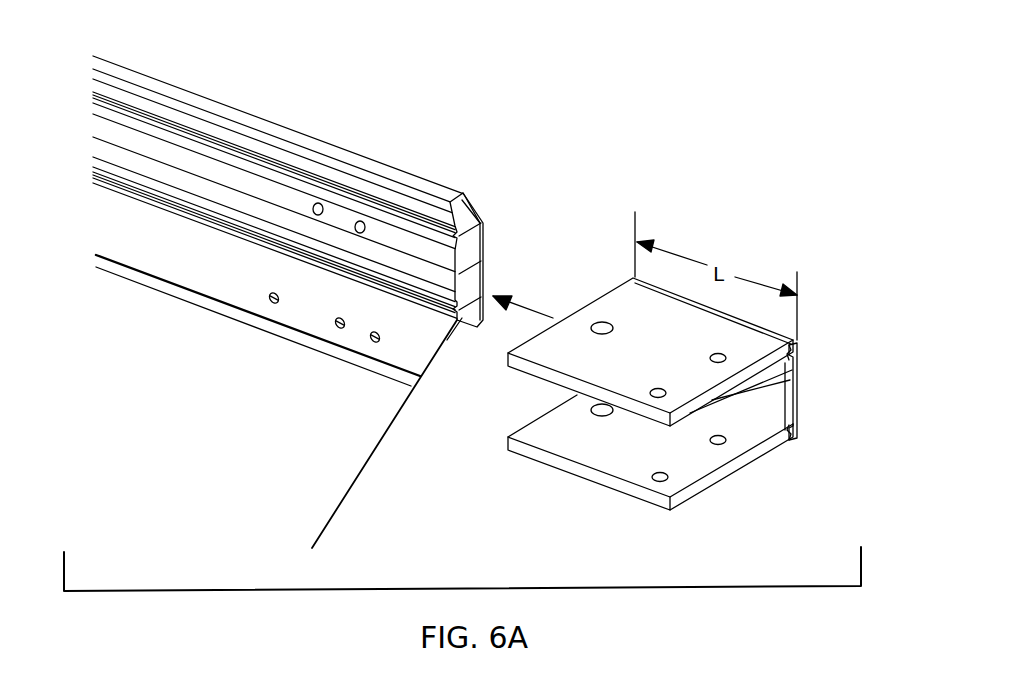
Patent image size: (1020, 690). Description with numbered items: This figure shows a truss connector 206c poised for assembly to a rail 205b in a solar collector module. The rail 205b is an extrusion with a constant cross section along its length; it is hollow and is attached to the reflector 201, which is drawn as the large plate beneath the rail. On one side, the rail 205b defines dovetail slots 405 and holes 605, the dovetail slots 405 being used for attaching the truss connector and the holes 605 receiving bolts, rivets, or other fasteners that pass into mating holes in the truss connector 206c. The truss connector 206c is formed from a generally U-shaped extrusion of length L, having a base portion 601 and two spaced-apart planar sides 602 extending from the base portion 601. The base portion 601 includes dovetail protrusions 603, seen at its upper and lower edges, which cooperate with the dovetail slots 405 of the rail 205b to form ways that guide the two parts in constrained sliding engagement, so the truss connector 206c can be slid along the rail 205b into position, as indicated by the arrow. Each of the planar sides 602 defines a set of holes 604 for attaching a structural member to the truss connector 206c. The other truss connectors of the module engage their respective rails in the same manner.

The reflector 201 is at (209, 433).
The rail 205b is at (214, 105).
The holes 605 is at (360, 221).
The dovetail slots 405 is at (485, 256).
The truss connector 206c is at (618, 308).
The holes 604 is at (600, 334).
The planar sides 602 is at (687, 418).
The base portion 601 is at (795, 395).
The dovetail protrusions 603 is at (793, 347).